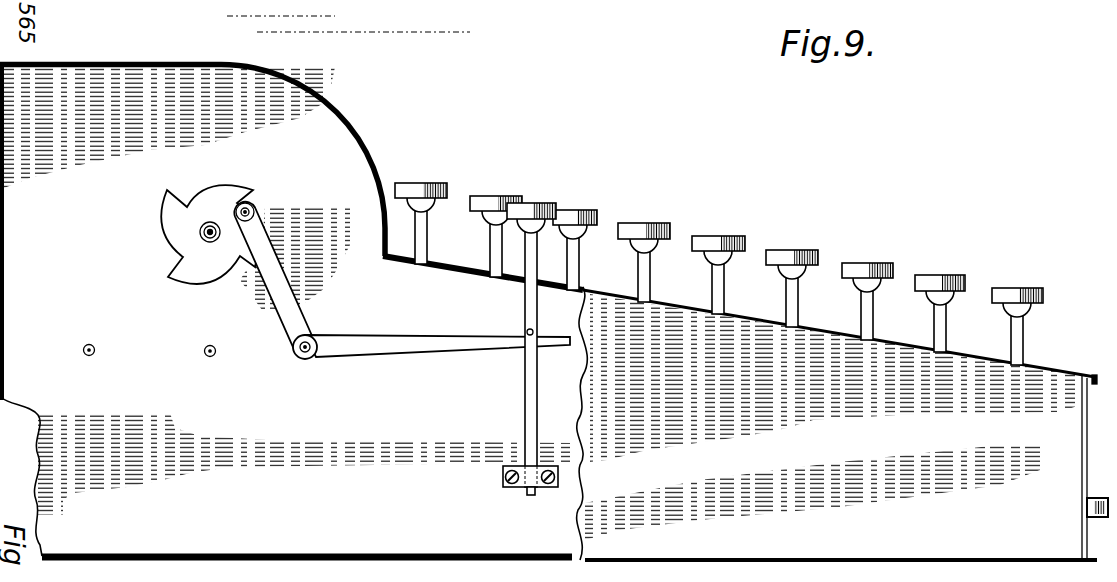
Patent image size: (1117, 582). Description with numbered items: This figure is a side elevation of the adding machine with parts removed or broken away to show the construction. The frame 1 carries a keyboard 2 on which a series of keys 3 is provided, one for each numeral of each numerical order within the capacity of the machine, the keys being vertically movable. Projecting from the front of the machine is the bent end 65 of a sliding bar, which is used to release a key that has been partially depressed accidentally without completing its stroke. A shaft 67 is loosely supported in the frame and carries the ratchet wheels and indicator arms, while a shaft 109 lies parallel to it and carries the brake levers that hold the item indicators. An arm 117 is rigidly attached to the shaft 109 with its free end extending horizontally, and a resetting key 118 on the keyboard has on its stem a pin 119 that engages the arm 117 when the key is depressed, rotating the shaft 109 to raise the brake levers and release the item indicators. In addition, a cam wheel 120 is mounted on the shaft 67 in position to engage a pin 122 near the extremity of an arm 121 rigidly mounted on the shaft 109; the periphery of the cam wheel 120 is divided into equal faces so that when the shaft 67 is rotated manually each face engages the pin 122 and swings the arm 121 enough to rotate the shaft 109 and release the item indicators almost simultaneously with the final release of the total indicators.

The frame 1 is at (1087, 453).
The keyboard 2 is at (596, 297).
The keys 3 is at (634, 223).
The bent end of sliding bar 65 is at (1097, 497).
The shaft 67 is at (210, 222).
The shaft 109 is at (305, 356).
The arm 117 is at (410, 348).
The resetting key 118 is at (543, 203).
The pin 119 is at (527, 330).
The cam wheel 120 is at (183, 276).
The arm 121 is at (280, 268).
The pin 122 is at (250, 206).